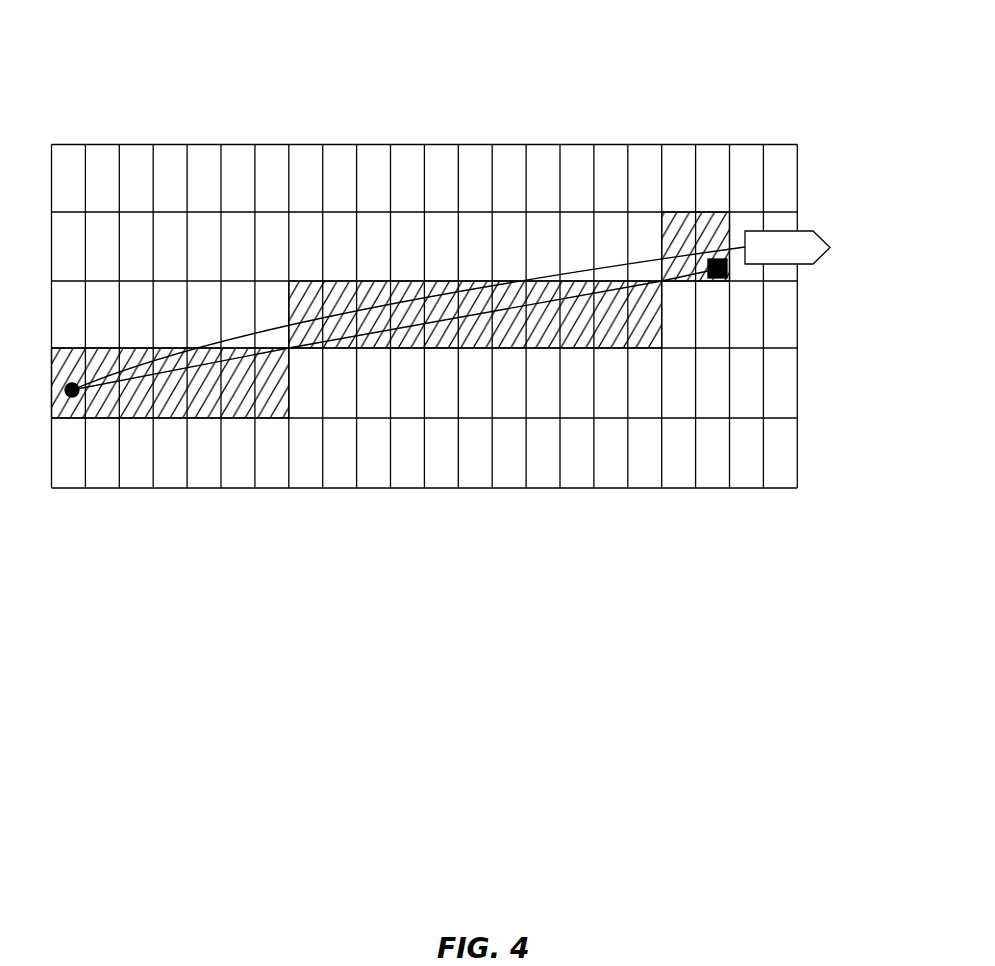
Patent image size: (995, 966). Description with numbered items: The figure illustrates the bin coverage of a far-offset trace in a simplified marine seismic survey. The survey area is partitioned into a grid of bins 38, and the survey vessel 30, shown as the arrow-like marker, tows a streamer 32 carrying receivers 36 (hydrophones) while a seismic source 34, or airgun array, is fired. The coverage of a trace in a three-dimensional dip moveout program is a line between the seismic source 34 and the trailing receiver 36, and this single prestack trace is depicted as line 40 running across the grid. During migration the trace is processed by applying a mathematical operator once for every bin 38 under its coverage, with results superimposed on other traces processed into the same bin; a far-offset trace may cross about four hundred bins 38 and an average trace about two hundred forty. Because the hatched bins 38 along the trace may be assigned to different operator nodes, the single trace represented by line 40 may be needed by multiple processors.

The survey vessel 30 is at (813, 230).
The streamer 32 is at (572, 270).
The seismic source 34 is at (727, 272).
The receiver 36 is at (52, 388).
The bin 38 is at (195, 477).
The line 40 is at (289, 348).